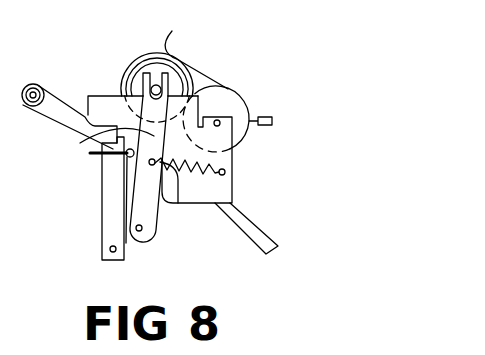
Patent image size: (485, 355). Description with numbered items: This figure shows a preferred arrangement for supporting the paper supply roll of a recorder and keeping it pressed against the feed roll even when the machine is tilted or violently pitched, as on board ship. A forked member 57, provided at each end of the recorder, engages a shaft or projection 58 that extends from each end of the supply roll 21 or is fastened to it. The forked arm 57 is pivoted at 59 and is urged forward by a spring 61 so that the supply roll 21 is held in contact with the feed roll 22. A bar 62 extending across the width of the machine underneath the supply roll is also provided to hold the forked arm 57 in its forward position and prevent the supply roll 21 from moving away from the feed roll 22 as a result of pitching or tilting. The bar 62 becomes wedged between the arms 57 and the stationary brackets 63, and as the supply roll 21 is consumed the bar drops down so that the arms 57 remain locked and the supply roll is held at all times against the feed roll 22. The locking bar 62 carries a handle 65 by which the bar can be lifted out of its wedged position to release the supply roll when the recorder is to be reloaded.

The supply roll 21 is at (133, 72).
The feed roll 22 is at (218, 99).
The forked member 57 is at (93, 139).
The shaft or projection 58 is at (157, 85).
The pivot 59 is at (133, 240).
The spring 61 is at (179, 204).
The bar 62 is at (125, 158).
The stationary bracket 63 is at (105, 228).
The handle 65 is at (117, 153).